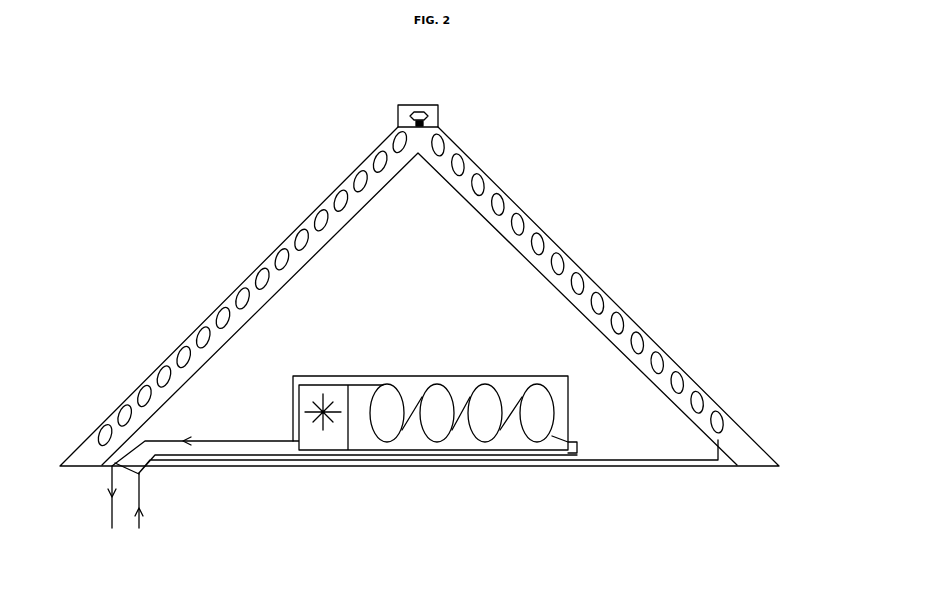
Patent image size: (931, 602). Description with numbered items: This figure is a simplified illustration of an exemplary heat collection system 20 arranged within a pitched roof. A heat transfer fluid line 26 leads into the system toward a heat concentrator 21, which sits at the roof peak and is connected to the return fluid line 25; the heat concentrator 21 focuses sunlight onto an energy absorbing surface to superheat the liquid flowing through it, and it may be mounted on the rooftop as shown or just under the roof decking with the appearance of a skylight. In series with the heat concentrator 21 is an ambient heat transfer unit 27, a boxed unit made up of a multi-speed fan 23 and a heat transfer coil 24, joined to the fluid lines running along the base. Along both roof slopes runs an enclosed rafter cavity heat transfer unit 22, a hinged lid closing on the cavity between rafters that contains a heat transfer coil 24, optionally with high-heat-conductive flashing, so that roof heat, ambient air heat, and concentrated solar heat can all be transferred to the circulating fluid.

The heat collection system 20 is at (242, 135).
The heat concentrator 21 is at (438, 107).
The enclosed rafter cavity heat transfer unit 22 is at (278, 251).
The multi-speed fan 23 is at (323, 394).
The heat transfer coil 24 is at (500, 394).
The return fluid line 25 is at (109, 520).
The heat transfer fluid line 26 is at (141, 494).
The ambient heat transfer unit 27 is at (455, 450).